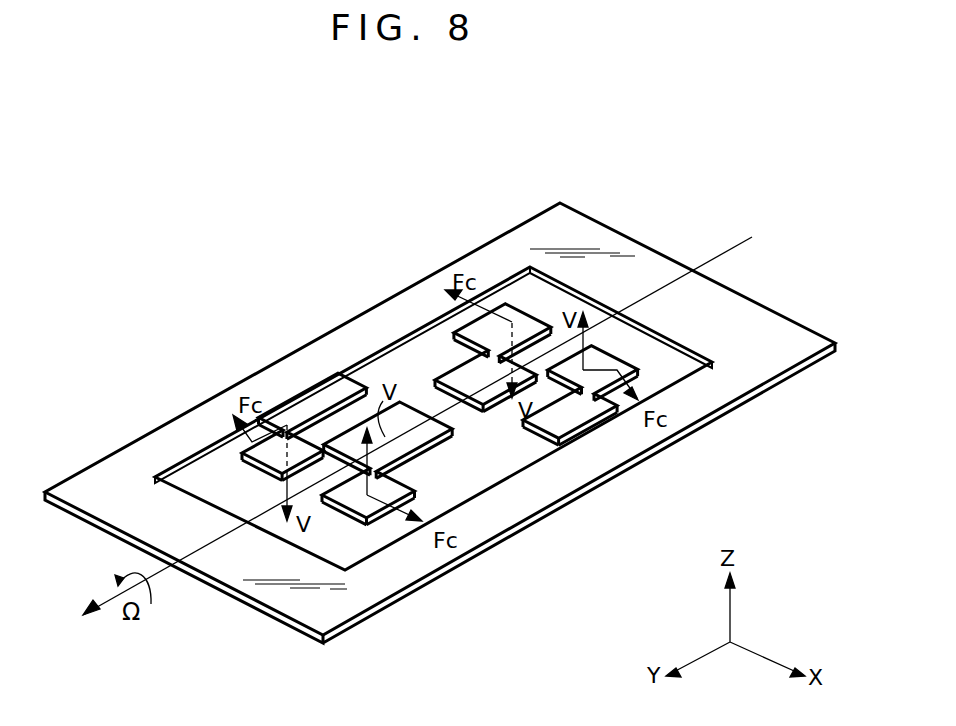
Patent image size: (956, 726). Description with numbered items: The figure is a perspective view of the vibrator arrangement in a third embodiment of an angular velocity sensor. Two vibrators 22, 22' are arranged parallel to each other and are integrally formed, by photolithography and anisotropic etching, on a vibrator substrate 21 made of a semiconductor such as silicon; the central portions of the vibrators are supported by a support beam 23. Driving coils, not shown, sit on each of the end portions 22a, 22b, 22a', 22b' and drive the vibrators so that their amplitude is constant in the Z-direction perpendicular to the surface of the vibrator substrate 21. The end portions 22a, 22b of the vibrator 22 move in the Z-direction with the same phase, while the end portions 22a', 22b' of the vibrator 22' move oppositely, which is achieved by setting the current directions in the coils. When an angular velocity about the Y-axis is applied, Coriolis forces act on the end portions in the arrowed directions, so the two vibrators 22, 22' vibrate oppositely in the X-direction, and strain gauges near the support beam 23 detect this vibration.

The vibrator substrate 21 is at (786, 334).
The vibrator 22 is at (658, 441).
The end portion of vibrator 22a is at (693, 409).
The end portion of vibrator 22b is at (396, 526).
The vibrator 22' is at (432, 294).
The end portion of vibrator 22a' is at (505, 269).
The end portion of vibrator 22b' is at (219, 426).
The support beam 23 is at (385, 352).